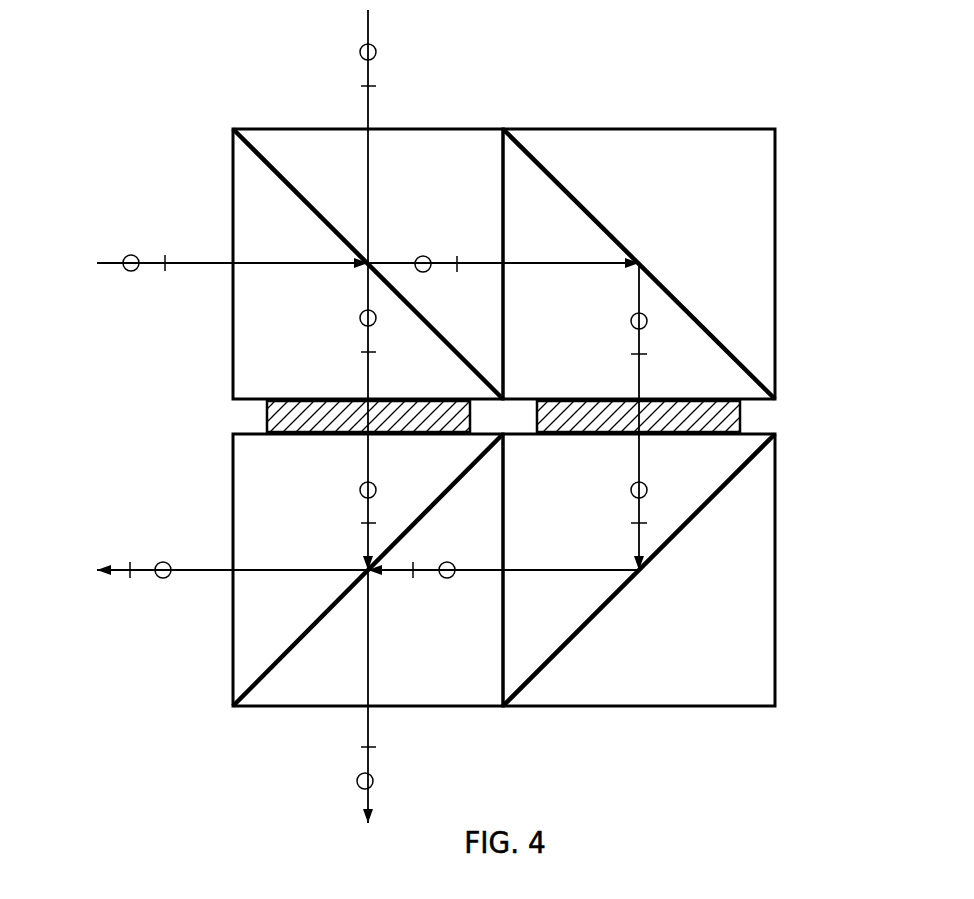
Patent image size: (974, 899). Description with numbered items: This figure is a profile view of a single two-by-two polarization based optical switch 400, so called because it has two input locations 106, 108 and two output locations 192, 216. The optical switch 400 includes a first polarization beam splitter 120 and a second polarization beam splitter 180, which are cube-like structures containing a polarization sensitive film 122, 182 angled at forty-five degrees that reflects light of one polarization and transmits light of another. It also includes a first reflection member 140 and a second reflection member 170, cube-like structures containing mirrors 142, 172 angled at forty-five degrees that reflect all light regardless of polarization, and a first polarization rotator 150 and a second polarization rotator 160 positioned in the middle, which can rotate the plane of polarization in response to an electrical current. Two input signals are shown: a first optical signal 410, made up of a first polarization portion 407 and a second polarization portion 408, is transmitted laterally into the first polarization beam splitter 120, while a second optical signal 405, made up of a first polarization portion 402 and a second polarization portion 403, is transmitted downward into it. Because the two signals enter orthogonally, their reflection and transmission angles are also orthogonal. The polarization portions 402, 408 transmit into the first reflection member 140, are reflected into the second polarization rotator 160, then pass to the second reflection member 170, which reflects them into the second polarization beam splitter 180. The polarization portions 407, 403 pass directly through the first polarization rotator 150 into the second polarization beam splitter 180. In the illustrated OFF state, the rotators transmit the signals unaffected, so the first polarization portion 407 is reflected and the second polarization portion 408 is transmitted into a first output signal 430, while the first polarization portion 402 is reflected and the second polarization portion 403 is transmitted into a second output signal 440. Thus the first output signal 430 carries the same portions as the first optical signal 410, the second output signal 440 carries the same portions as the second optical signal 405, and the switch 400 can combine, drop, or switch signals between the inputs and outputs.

The optical switch 400 is at (862, 195).
The second optical signal 405 is at (314, 46).
The first polarization portion 402 is at (360, 52).
The second polarization portion 403 is at (361, 87).
The input location 108 is at (372, 125).
The first polarization beam splitter 120 is at (430, 129).
The polarization sensitive film 122 is at (258, 156).
The first reflection member 140 is at (642, 129).
The mirror 142 is at (552, 170).
The input location 106 is at (228, 258).
The first polarization portion 407 is at (130, 271).
The second polarization portion 408 is at (165, 271).
The first optical signal 410 is at (108, 312).
The first polarization rotator 150 is at (267, 428).
The second polarization rotator 160 is at (742, 427).
The mirror 172 is at (732, 478).
The second reflection member 170 is at (636, 708).
The second polarization beam splitter 180 is at (300, 708).
The polarization sensitive film 182 is at (236, 690).
The output location 192 is at (228, 563).
The first output signal 430 is at (108, 617).
The output location 216 is at (356, 720).
The second output signal 440 is at (423, 727).